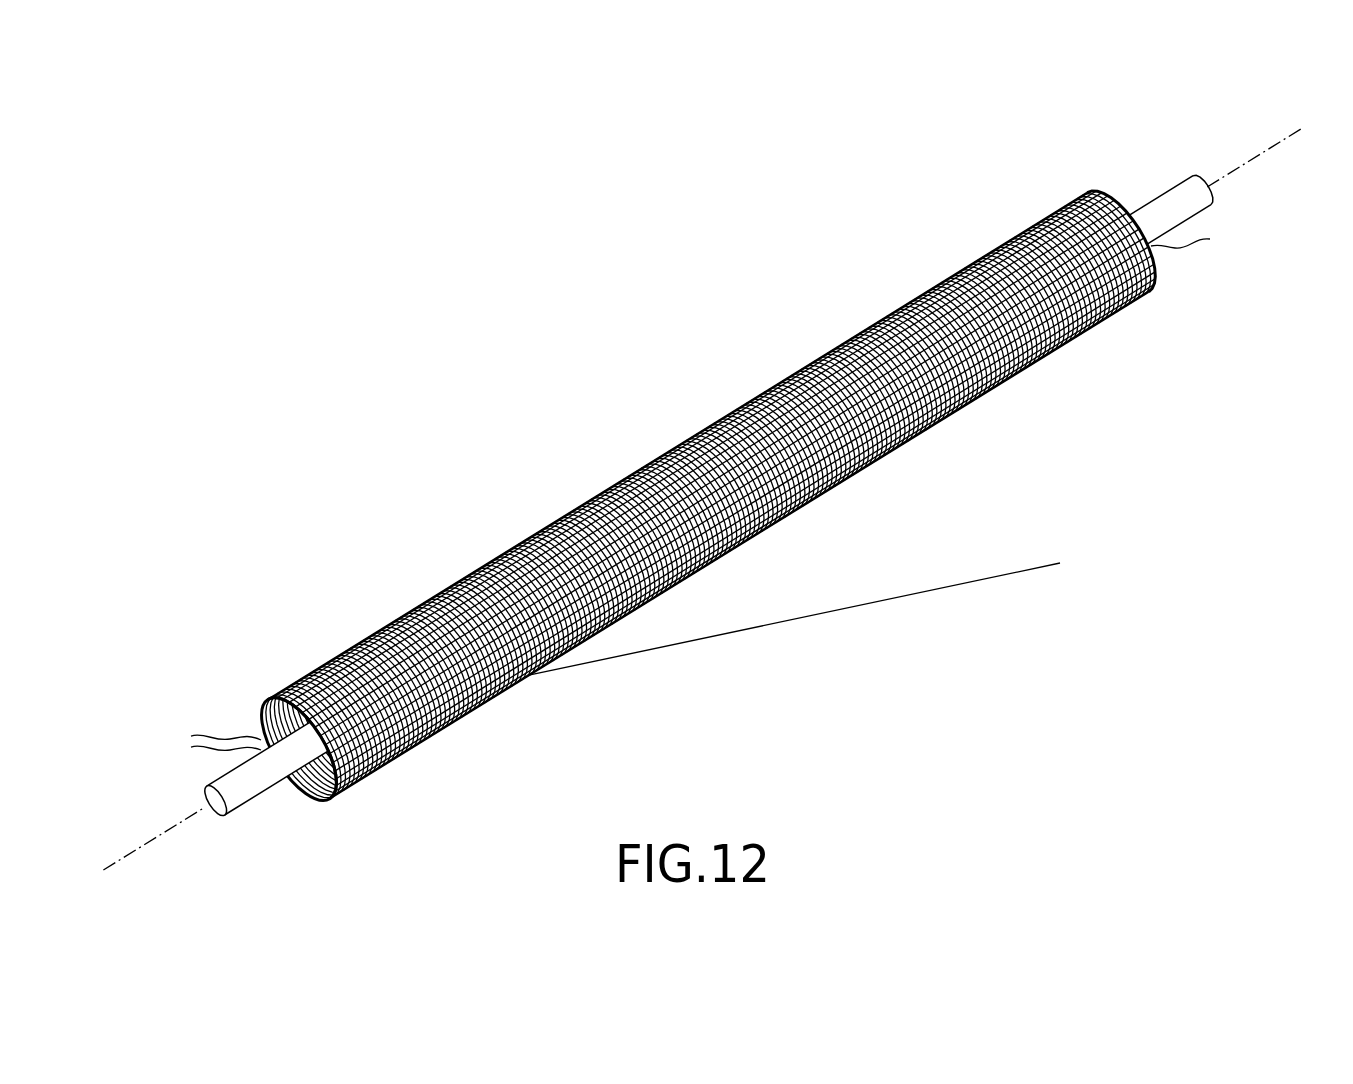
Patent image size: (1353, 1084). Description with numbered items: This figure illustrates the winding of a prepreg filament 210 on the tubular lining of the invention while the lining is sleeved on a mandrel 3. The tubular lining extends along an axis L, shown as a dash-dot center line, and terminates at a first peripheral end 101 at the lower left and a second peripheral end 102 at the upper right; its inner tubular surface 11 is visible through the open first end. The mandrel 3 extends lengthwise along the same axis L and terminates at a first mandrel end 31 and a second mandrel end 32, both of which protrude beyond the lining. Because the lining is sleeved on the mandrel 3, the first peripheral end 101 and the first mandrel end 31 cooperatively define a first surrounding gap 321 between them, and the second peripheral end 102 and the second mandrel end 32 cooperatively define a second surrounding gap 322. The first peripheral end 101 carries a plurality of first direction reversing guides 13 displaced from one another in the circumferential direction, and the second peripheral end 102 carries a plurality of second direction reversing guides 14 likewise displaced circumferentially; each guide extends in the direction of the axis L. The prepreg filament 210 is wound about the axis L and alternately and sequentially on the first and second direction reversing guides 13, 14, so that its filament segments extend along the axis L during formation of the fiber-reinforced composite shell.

The inner tubular surface 11 is at (262, 717).
The first peripheral end 101 is at (268, 700).
The second peripheral end 102 is at (1094, 191).
The first direction reversing guides 13 is at (209, 745).
The second direction reversing guides 14 is at (1198, 237).
The mandrel 3 is at (216, 794).
The first mandrel end 31 is at (208, 798).
The second mandrel end 32 is at (1210, 183).
The first surrounding gap 321 is at (328, 758).
The second surrounding gap 322 is at (1140, 181).
The prepreg filament 210 is at (893, 600).
The axis L is at (714, 486).